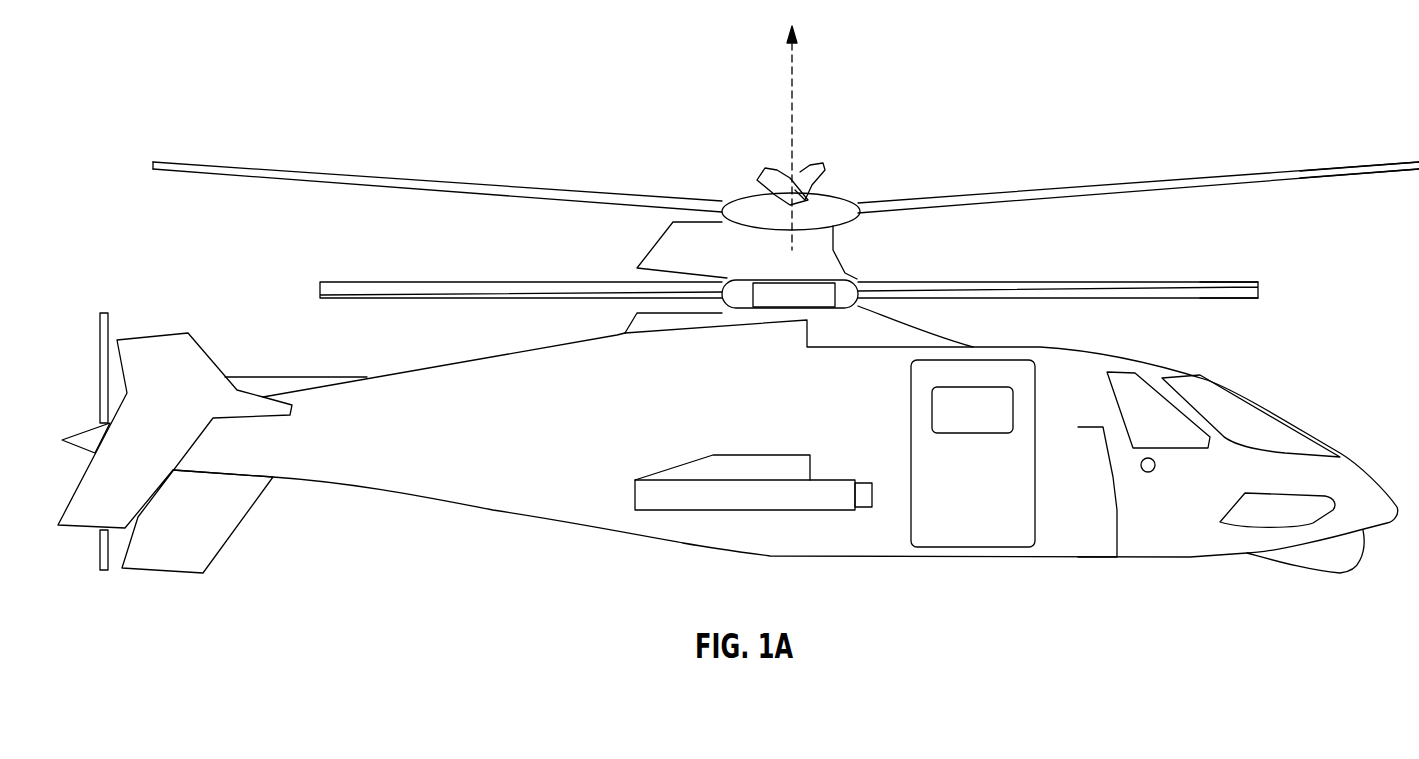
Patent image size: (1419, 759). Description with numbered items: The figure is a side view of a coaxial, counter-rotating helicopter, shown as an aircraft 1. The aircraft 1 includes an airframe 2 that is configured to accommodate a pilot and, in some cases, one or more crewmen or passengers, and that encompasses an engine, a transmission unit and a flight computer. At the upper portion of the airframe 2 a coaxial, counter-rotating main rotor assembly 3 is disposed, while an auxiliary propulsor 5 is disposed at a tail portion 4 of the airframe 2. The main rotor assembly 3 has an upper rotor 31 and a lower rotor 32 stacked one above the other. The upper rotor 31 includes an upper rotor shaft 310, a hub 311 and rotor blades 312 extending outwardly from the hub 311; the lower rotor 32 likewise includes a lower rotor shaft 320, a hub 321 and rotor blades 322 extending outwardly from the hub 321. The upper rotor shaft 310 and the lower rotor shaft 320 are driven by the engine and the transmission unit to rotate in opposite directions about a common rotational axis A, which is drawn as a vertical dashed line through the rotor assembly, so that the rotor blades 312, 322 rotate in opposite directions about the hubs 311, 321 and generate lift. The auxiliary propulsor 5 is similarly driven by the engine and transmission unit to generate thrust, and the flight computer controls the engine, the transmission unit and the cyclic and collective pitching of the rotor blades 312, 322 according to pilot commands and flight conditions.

The aircraft 1 is at (355, 508).
The airframe 2 is at (475, 470).
The coaxial, counter-rotating main rotor assembly 3 is at (690, 252).
The tail portion 4 is at (318, 410).
The auxiliary propulsor 5 is at (103, 312).
The upper rotor 31 is at (1128, 182).
The lower rotor 32 is at (1132, 282).
The upper rotor shaft 310 is at (833, 250).
The hub 311 is at (835, 195).
The rotor blades 312 is at (1385, 162).
The lower rotor shaft 320 is at (755, 320).
The hub 321 is at (812, 293).
The rotor blades 322 is at (1260, 290).
The common rotational axis A is at (788, 110).